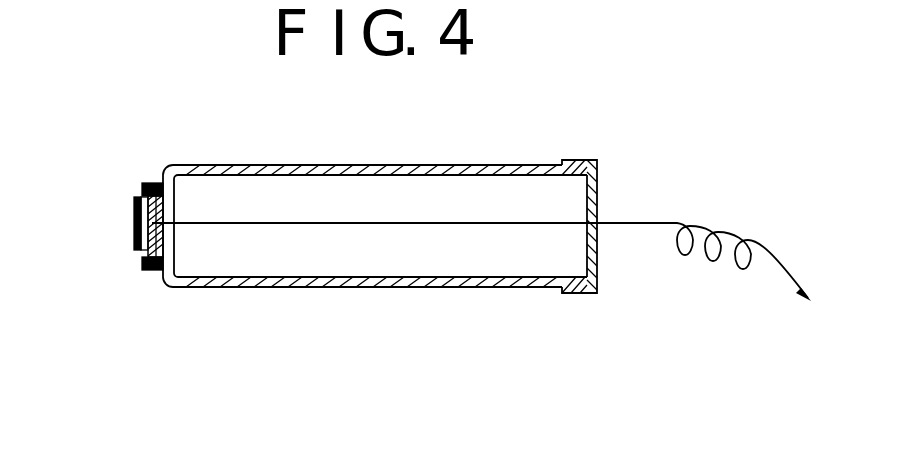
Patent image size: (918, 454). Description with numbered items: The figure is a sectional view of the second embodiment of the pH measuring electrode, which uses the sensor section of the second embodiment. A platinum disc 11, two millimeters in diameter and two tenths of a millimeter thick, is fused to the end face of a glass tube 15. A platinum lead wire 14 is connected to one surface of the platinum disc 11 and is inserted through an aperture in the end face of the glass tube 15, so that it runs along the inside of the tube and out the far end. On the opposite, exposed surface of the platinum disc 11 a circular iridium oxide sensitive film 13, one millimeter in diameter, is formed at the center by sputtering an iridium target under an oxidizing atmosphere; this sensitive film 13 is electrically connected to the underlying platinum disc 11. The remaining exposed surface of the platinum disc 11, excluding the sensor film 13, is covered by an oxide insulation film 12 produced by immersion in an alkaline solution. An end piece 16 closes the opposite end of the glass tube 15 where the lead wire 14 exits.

The platinum disc 11 is at (157, 260).
The insulation film 12 is at (142, 183).
The iridium oxide sensitive film 13 is at (133, 230).
The platinum lead wire 14 is at (403, 224).
The glass tube 15 is at (365, 165).
The end cap 16 is at (600, 205).